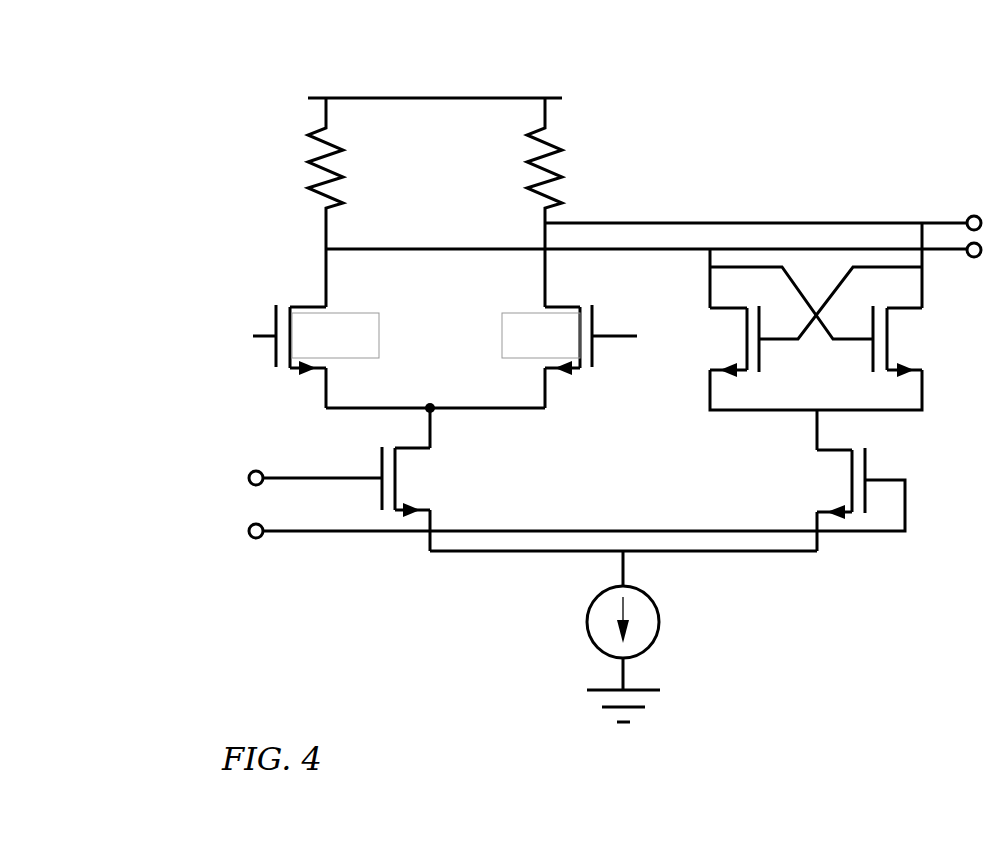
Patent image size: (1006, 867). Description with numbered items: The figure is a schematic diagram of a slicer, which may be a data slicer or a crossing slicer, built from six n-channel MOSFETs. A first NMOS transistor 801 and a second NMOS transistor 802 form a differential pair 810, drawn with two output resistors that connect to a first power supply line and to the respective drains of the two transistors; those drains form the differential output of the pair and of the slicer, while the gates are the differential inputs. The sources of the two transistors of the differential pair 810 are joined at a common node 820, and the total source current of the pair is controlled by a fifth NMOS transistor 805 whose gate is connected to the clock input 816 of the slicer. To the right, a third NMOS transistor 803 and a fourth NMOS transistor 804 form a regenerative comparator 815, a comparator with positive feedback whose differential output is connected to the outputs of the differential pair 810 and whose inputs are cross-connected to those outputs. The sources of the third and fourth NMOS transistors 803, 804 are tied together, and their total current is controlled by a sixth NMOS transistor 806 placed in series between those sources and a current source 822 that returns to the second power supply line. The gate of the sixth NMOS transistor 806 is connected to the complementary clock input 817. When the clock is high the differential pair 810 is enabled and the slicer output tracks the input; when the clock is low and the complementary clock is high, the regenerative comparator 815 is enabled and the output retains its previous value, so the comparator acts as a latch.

The first NMOS transistor 801 is at (290, 295).
The second NMOS transistor 802 is at (582, 390).
The third NMOS transistor 803 is at (723, 345).
The fourth NMOS transistor 804 is at (897, 335).
The fifth NMOS transistor 805 is at (417, 475).
The sixth NMOS transistor 806 is at (835, 478).
The differential pair 810 is at (285, 77).
The regenerative comparator 815 is at (809, 285).
The clock input 816 is at (242, 478).
The complementary clock input 817 is at (242, 531).
The common node 820 is at (430, 425).
The current source 822 is at (658, 622).